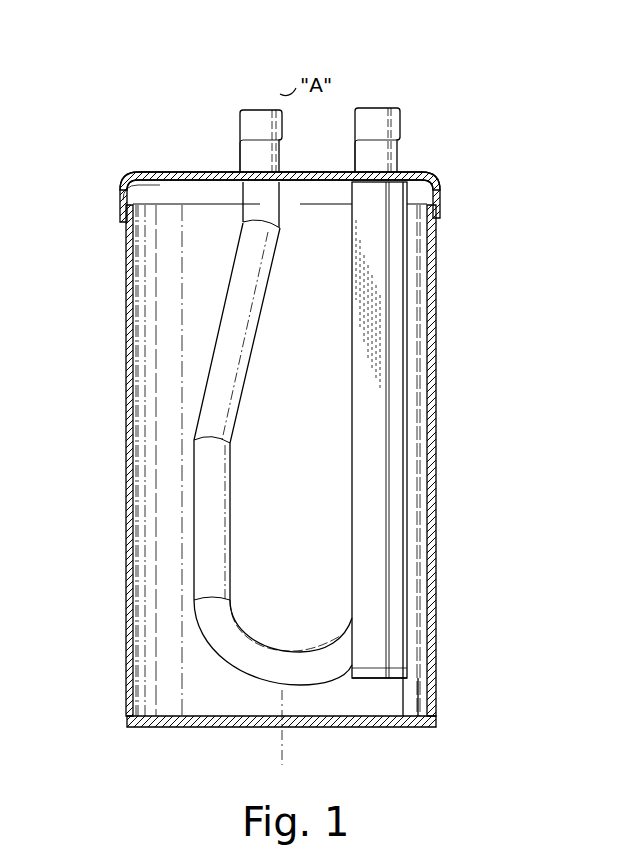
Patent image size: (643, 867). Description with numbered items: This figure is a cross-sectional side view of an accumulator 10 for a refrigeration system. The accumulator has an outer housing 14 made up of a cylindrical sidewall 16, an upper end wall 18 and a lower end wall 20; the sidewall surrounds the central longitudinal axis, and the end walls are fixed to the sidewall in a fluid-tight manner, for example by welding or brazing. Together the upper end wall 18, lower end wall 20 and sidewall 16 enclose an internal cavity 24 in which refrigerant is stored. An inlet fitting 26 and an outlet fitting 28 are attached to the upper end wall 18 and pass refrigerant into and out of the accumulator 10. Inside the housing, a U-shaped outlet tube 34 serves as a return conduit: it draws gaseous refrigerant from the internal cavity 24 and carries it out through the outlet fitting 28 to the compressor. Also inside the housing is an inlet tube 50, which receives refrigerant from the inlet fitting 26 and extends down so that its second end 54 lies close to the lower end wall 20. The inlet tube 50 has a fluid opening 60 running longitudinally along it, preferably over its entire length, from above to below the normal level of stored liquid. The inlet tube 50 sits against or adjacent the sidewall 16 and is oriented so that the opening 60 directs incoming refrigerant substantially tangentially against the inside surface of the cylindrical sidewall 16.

The accumulator 10 is at (539, 161).
The outer housing 14 is at (120, 205).
The cylindrical sidewall 16 is at (130, 525).
The upper end wall 18 is at (172, 172).
The lower end wall 20 is at (193, 727).
The internal cavity 24 is at (170, 583).
The inlet fitting 26 is at (377, 122).
The outlet fitting 28 is at (257, 128).
The outlet tube 34 is at (235, 328).
The inlet tube 50 is at (375, 415).
The second end 54 is at (375, 665).
The fluid opening 60 is at (392, 503).